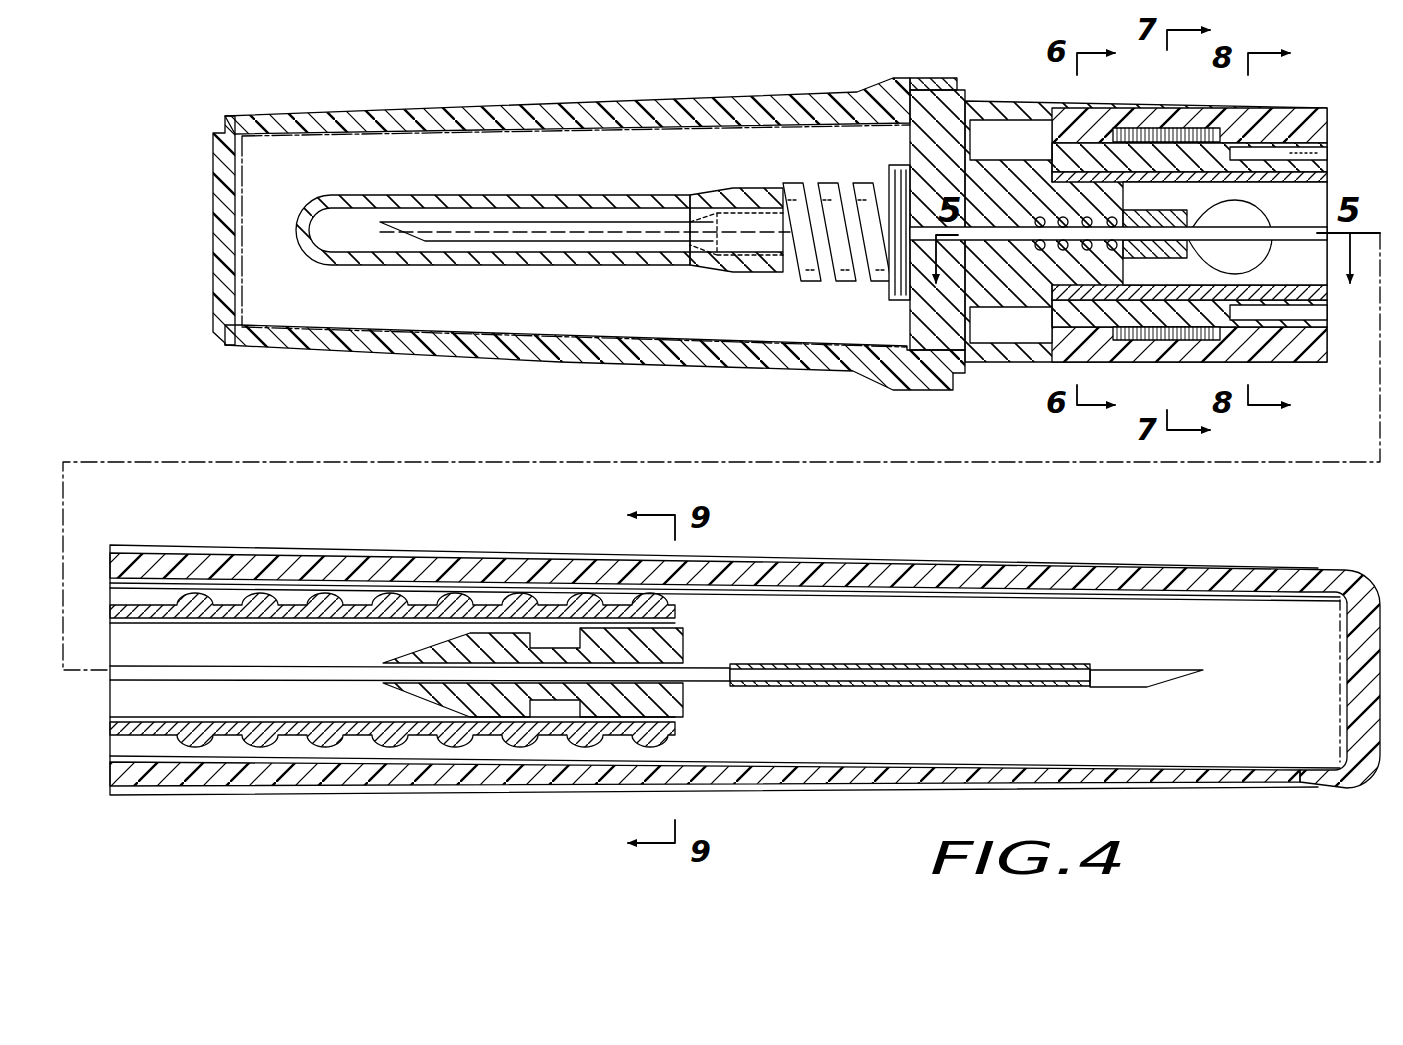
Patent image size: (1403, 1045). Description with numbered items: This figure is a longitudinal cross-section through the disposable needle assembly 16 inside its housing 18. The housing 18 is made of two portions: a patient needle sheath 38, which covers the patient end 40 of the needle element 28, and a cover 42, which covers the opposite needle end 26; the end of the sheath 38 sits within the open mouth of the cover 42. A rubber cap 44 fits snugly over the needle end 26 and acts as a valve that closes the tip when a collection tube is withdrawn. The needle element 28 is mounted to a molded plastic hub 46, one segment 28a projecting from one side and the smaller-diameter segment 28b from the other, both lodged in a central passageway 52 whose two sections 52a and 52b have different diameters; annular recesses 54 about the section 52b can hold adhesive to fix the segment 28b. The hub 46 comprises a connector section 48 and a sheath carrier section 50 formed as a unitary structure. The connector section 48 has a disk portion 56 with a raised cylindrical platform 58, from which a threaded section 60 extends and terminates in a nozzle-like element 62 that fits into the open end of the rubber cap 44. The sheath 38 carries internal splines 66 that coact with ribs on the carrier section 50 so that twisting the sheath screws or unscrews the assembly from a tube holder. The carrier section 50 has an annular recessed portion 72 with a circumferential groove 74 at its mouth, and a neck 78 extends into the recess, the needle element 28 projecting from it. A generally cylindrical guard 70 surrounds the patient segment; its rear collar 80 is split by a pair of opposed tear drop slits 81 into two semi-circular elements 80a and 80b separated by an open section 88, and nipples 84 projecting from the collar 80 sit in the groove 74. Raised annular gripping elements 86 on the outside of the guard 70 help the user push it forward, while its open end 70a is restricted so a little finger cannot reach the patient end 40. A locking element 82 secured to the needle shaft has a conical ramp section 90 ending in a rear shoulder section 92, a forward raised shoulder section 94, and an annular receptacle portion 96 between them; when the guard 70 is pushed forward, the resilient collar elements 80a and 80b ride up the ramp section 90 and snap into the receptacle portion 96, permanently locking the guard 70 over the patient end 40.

The needle assembly 16 is at (812, 294).
The housing 18 is at (706, 68).
The needle end 26 is at (508, 226).
The needle element 28 is at (722, 660).
The needle segment 28a is at (662, 244).
The needle segment 28b is at (1148, 668).
The patient needle sheath 38 is at (852, 556).
The patient end 40 is at (962, 688).
The cover 42 is at (488, 110).
The rubber cap 44 is at (413, 266).
The hub 46 is at (998, 150).
The connector section 48 is at (909, 138).
The sheath carrier section 50 is at (1062, 352).
The central passageway 52 is at (1036, 248).
The passageway section 52a is at (1010, 252).
The passageway section 52b is at (1004, 232).
The annular recesses 54 is at (1011, 140).
The disk portion 56 is at (936, 128).
The raised cylindrical platform 58 is at (893, 296).
The threaded section 60 is at (802, 184).
The nozzle-like element 62 is at (738, 212).
The internal splines 66 is at (1143, 128).
The guard 70 is at (1320, 165).
The open end 70a is at (686, 712).
The annular recessed portion 72 is at (1188, 170).
The circumferential groove 74 is at (1252, 152).
The neck 78 is at (1150, 222).
The collar 80 is at (1122, 330).
The semi-circular collar element 80a is at (1104, 178).
The semi-circular collar element 80b is at (1011, 325).
The tear drop slits 81 is at (1250, 262).
The locking element 82 is at (470, 702).
The nipples 84 is at (1278, 162).
The raised annular gripping elements 86 is at (462, 602).
The open section 88 is at (1150, 252).
The ramp section 90 is at (425, 692).
The rear shoulder section 92 is at (510, 640).
The raised shoulder section 94 is at (622, 705).
The annular receptacle portion 96 is at (555, 718).